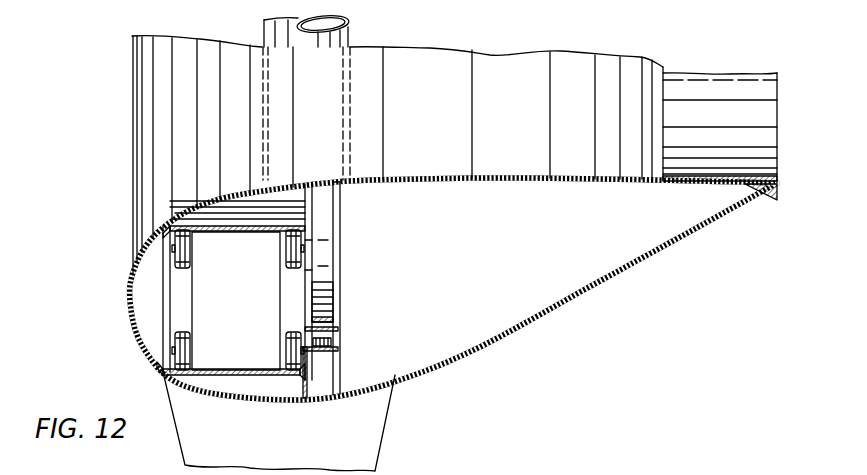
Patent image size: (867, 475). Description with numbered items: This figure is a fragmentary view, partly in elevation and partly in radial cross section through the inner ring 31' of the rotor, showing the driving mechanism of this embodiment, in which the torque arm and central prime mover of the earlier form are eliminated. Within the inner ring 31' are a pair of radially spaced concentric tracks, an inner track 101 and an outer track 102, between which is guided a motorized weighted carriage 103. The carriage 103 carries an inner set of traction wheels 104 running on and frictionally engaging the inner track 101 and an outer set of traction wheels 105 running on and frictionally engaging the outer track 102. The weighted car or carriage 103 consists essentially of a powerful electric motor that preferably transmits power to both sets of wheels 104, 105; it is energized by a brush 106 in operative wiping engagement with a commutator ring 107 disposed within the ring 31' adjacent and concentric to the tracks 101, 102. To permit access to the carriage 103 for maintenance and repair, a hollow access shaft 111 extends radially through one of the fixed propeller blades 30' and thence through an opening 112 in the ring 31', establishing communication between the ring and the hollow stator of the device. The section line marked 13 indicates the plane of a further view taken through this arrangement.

The fixed propeller blade 30' is at (454, 155).
The inner ring 31' is at (453, 289).
The inner track 101 is at (272, 225).
The outer track 102 is at (262, 369).
The motorized weighted carriage 103 is at (200, 293).
The inner set of traction wheels 104 is at (176, 239).
The outer set of traction wheels 105 is at (173, 341).
The brush 106 is at (337, 331).
The commutator ring 107 is at (338, 349).
The hollow access shaft 111 is at (352, 29).
The opening 112 is at (333, 182).
The section line 13- 13 is at (222, 453).